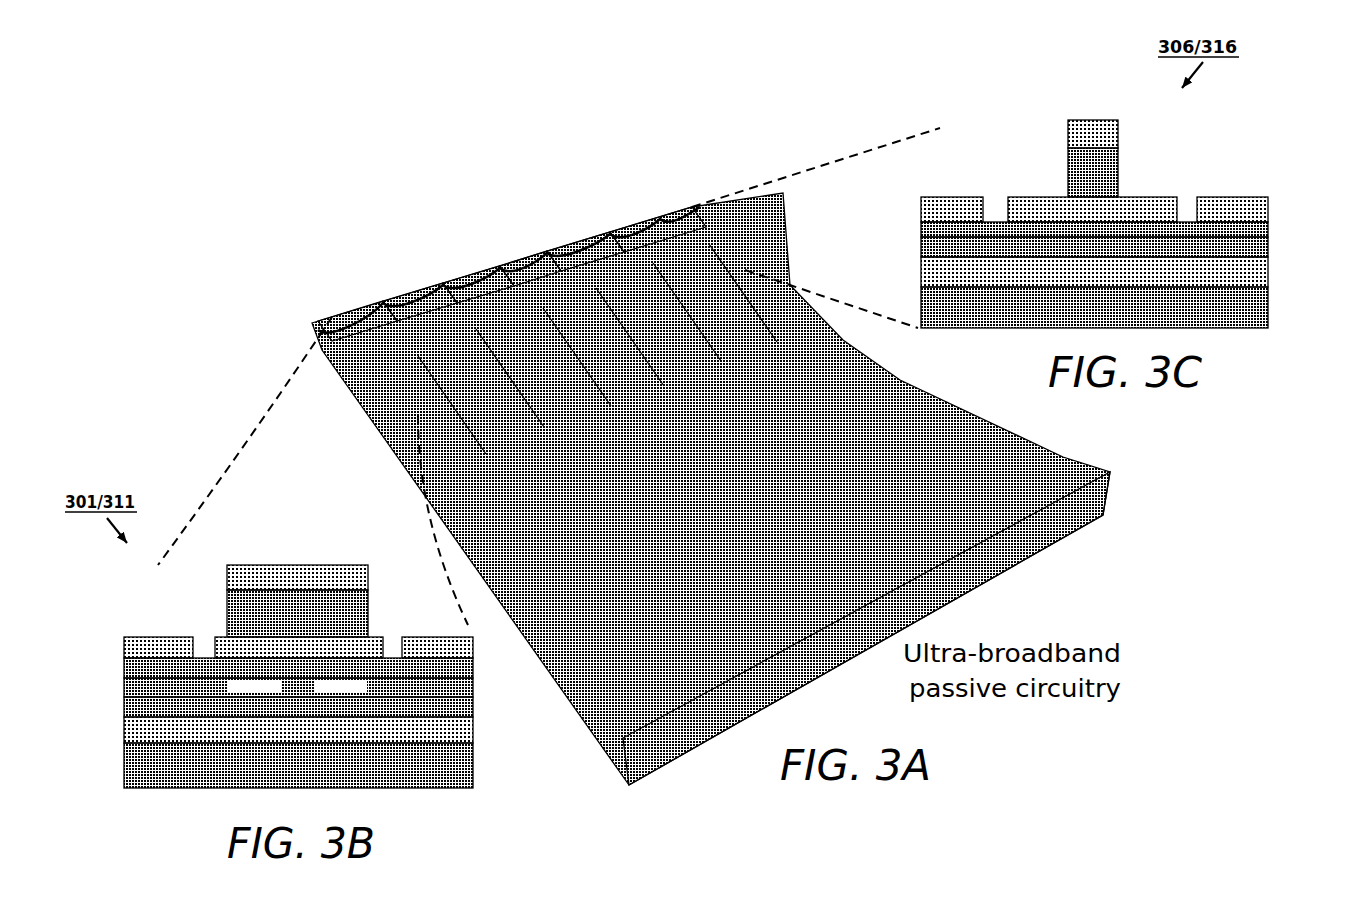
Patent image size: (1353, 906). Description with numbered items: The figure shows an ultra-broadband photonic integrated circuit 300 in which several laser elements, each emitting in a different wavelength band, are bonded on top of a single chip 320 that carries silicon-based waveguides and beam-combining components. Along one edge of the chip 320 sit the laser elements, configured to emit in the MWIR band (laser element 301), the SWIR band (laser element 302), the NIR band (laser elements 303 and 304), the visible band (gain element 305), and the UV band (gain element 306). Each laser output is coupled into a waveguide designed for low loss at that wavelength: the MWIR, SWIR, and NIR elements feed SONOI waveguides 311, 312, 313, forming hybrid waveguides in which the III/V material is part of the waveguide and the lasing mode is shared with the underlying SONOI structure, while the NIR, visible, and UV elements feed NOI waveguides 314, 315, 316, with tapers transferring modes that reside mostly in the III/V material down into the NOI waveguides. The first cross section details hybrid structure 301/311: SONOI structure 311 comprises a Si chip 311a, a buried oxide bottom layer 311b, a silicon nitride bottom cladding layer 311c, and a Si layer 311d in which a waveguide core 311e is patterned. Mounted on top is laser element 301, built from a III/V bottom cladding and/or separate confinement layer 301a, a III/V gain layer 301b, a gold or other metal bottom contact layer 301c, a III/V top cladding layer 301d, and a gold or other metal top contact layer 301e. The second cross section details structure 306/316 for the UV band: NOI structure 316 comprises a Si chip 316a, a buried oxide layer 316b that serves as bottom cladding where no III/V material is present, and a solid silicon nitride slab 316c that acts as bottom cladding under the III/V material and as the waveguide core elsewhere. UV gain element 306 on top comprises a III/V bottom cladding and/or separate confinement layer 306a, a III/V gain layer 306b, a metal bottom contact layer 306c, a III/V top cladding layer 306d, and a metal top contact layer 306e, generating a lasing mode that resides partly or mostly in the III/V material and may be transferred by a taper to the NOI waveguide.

In FIG. 3A, the ultra-broadband photonic integrated circuit 300 is at (323, 160).
In FIG. 3A, the MWIR laser element 301 is at (381, 307).
In FIG. 3A, the SWIR laser element 302 is at (440, 283).
In FIG. 3A, the NIR laser element 303 is at (496, 265).
In FIG. 3A, the NIR gain element 304 is at (553, 248).
In FIG. 3A, the visible gain element 305 is at (607, 233).
In FIG. 3A, the UV gain element 306 is at (657, 213).
In FIG. 3A, the SONOI structure 311 is at (452, 405).
In FIG. 3A, the SONOI waveguide 312 is at (510, 378).
In FIG. 3A, the SONOI waveguide 313 is at (577, 357).
In FIG. 3A, the NOI waveguide 314 is at (630, 337).
In FIG. 3A, the NOI waveguide 315 is at (687, 312).
In FIG. 3A, the NOI structure 316 is at (743, 293).
In FIG. 3A, the single chip 320 is at (1106, 516).
In FIG. 3B, the III/V bottom cladding and/or separate confinement layer 301a is at (476, 670).
In FIG. 3B, the III/V gain layer 301b is at (220, 637).
In FIG. 3B, the gold or other metal bottom contact layer 301c is at (121, 643).
In FIG. 3B, the III/V top cladding layer 301d is at (370, 622).
In FIG. 3B, the gold or other metal top contact layer 301e is at (370, 580).
In FIG. 3B, the Si chip 311a is at (121, 773).
In FIG. 3B, the buried oxide bottom layer 311b is at (121, 733).
In FIG. 3B, the Si3N4 bottom cladding layer 311c is at (121, 704).
In FIG. 3B, the Si layer 311d is at (121, 682).
In FIG. 3B, the waveguide core 311e is at (352, 683).
In FIG. 3C, the III/V bottom cladding and/or separate confinement layer 306a is at (1270, 228).
In FIG. 3C, the III/V gain layer 306b is at (1140, 192).
In FIG. 3C, the gold or other metal bottom contact layer 306c is at (1270, 197).
In FIG. 3C, the III/V top cladding layer 306d is at (1063, 175).
In FIG. 3C, the gold or other metal top contact layer 306e is at (1067, 135).
In FIG. 3C, the Si chip 316a is at (1270, 320).
In FIG. 3C, the buried oxide layer 316b is at (1270, 277).
In FIG. 3C, the Si3N4 layer 316c is at (1270, 250).